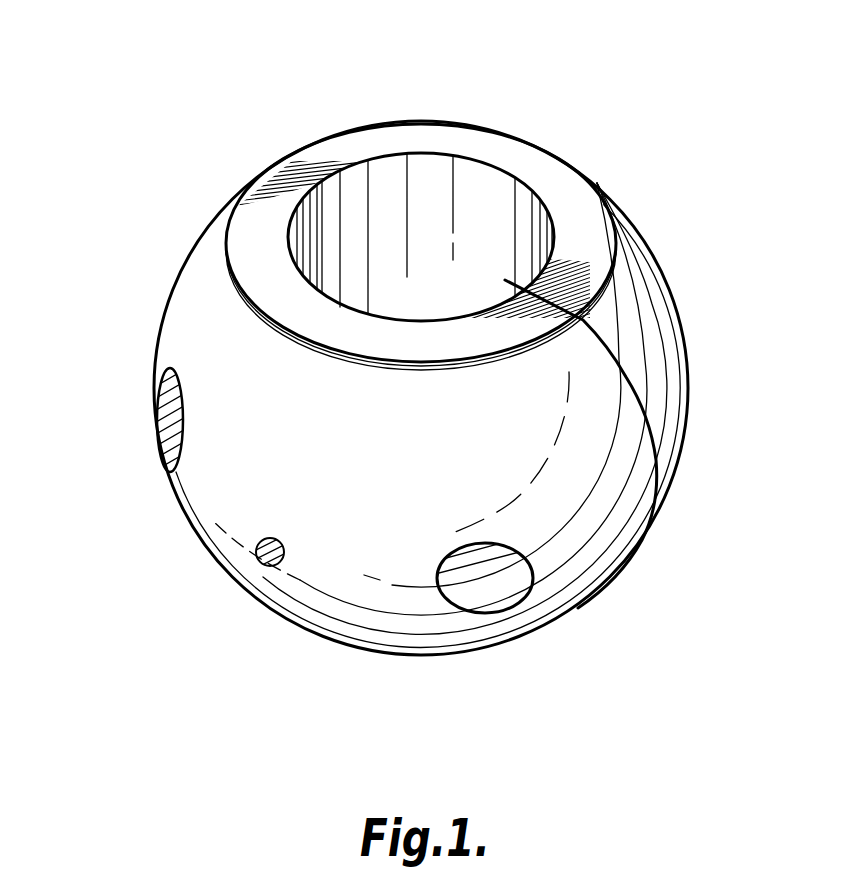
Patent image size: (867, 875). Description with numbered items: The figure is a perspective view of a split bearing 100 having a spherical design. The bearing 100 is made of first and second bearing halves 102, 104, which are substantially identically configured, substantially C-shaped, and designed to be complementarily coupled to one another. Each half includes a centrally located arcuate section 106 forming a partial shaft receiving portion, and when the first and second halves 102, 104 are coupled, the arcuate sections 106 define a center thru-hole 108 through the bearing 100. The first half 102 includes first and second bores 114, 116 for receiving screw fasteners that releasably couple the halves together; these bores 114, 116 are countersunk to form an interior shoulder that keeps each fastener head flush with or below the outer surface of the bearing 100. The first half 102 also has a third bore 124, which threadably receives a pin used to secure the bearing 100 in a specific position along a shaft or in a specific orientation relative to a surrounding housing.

The split bearing 100 is at (636, 128).
The first bearing half 102 is at (197, 535).
The second bearing half 104 is at (648, 250).
The arcuate section 106 is at (483, 158).
The center thru-hole 108 is at (372, 174).
The first bore 114 is at (170, 423).
The second bore 116 is at (503, 592).
The third bore 124 is at (266, 560).